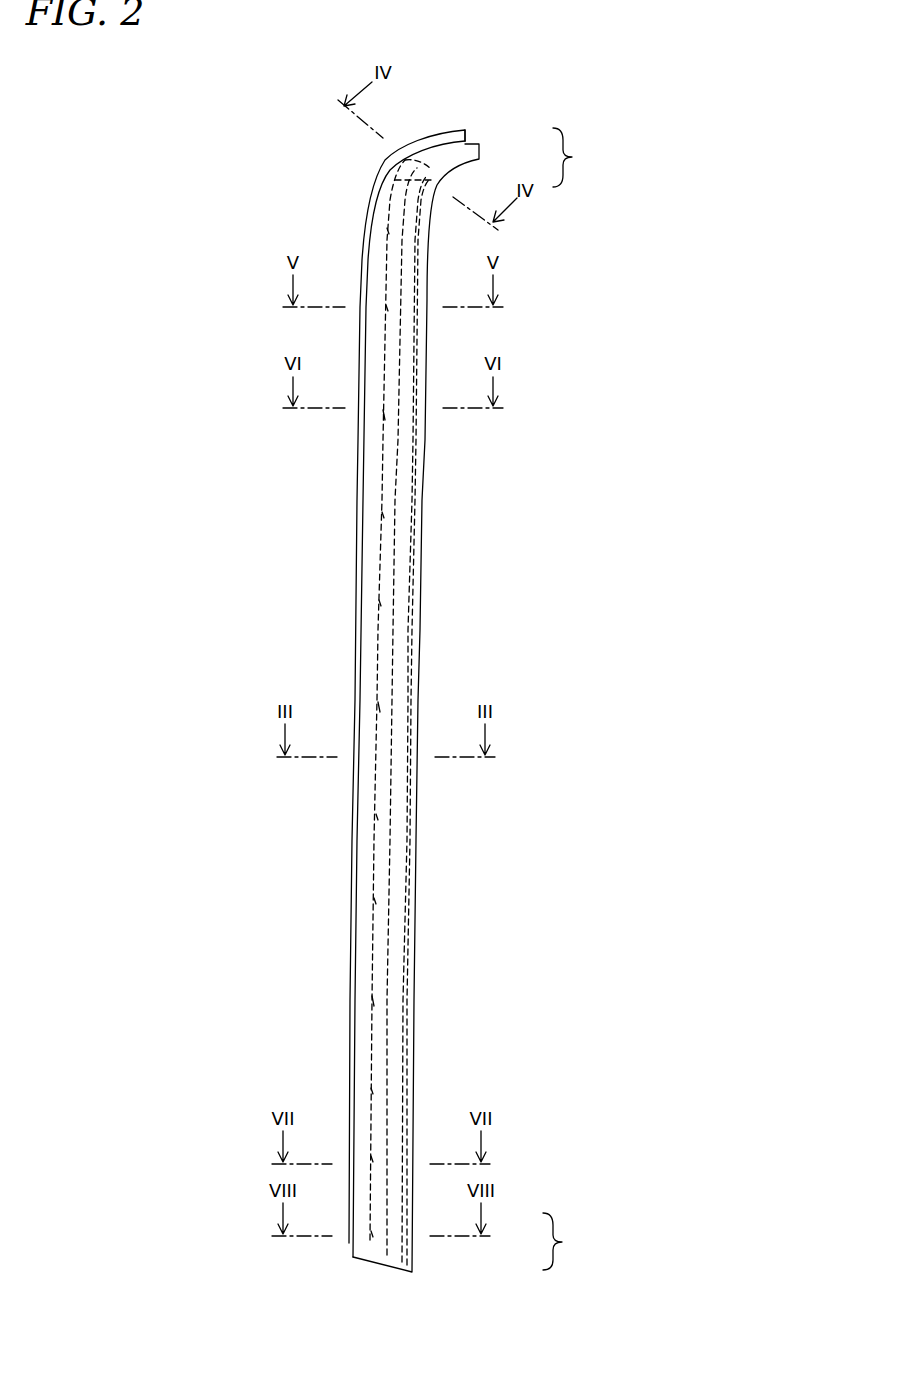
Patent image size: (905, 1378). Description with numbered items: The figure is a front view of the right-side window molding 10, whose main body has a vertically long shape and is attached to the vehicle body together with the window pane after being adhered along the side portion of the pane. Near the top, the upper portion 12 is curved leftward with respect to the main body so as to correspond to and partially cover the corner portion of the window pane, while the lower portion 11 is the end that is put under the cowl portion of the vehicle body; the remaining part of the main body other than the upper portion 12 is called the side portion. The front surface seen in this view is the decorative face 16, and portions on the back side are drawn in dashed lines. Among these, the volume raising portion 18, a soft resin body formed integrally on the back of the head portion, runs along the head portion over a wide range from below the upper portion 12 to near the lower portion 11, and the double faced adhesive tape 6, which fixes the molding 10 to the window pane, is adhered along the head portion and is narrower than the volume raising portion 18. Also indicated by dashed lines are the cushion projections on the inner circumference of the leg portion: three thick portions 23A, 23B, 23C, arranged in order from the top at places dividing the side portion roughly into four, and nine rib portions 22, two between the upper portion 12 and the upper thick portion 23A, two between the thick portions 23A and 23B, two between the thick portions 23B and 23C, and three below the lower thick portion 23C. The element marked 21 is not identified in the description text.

The molding 10 is at (330, 701).
The lower portion 11 is at (566, 1241).
The upper portion 12 is at (576, 157).
The decorative face 16 is at (367, 783).
The volume raising portion 18 is at (405, 160).
The side wall / peripheral edge 21 is at (437, 139).
The rib portion 22 is at (387, 308).
The upper thick portion 23A is at (385, 417).
The middle thick portion 23B is at (380, 708).
The lower thick portion 23C is at (373, 1002).
The double faced adhesive tape 6 is at (397, 190).